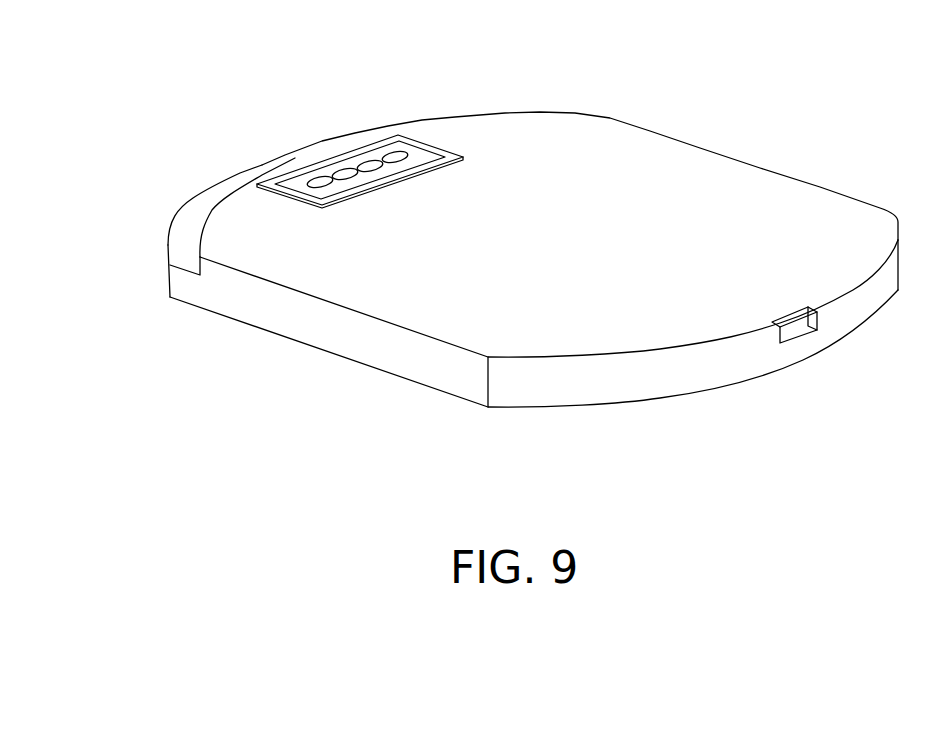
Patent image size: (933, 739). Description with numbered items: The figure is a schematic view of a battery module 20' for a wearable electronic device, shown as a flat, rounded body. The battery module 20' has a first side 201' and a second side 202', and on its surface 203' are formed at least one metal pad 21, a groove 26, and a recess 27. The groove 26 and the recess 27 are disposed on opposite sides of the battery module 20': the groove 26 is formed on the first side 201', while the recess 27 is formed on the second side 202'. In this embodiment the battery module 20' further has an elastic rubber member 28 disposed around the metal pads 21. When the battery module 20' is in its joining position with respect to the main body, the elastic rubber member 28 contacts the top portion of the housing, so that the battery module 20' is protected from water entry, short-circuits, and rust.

The battery module 20' is at (477, 245).
The metal pad 21 is at (393, 157).
The groove 26 is at (193, 222).
The recess 27 is at (790, 327).
The elastic rubber member 28 is at (265, 182).
The first side 201' is at (534, 350).
The second side 202' is at (128, 271).
The surface 203' is at (549, 216).